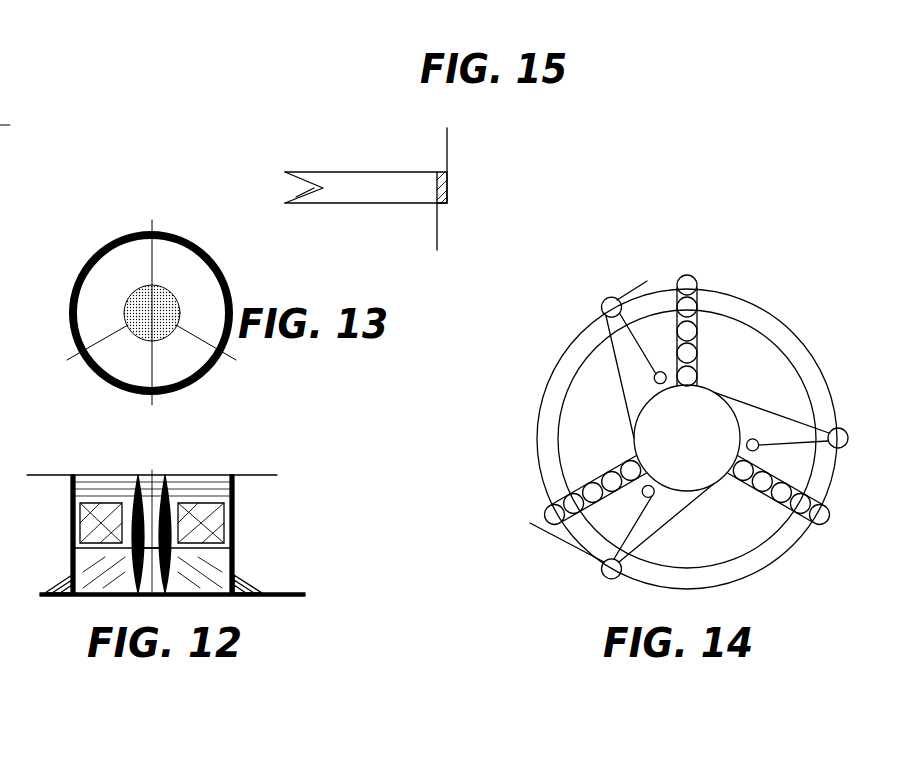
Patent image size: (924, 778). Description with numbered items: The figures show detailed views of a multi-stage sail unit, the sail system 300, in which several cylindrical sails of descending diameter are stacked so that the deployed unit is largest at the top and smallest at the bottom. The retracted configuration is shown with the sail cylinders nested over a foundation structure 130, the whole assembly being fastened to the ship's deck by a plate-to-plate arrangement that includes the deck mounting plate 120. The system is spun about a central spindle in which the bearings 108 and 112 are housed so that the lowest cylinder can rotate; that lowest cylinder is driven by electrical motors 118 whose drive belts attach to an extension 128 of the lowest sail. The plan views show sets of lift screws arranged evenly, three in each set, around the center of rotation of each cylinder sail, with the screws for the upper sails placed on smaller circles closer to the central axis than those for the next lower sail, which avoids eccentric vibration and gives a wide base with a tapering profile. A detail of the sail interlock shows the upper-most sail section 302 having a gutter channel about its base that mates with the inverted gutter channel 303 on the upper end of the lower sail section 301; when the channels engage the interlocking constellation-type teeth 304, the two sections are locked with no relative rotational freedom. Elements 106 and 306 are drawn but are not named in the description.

In FIG. 12, the spoke 106 is at (222, 473).
In FIG. 14, the spoke 106 is at (680, 276).
In FIG. 12, the bearing 108 is at (27, 442).
In FIG. 12, the bearing 112 is at (30, 480).
In FIG. 12, the electrical motor 118 is at (37, 534).
In FIG. 14, the electrical motor 118 is at (546, 518).
In FIG. 12, the deck mounting plate 120 is at (281, 589).
In FIG. 14, the extension 128 is at (758, 398).
In FIG. 12, the foundation structure 130 is at (238, 552).
In FIG. 14, the sail system 300 is at (778, 438).
In FIG. 12, the lower sail section 301 is at (238, 530).
In FIG. 15, the lower sail section 301 is at (437, 250).
In FIG. 15, the upper-most sail section 302 is at (447, 128).
In FIG. 15, the inverted gutter channel 303 is at (437, 172).
In FIG. 15, the interlocking constellation teeth 304 is at (285, 172).
In FIG. 14, the outer ring 306 is at (548, 440).